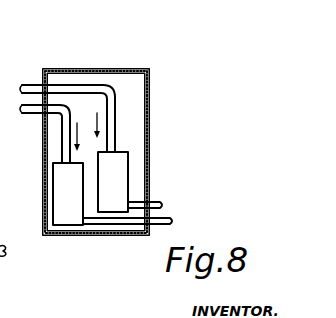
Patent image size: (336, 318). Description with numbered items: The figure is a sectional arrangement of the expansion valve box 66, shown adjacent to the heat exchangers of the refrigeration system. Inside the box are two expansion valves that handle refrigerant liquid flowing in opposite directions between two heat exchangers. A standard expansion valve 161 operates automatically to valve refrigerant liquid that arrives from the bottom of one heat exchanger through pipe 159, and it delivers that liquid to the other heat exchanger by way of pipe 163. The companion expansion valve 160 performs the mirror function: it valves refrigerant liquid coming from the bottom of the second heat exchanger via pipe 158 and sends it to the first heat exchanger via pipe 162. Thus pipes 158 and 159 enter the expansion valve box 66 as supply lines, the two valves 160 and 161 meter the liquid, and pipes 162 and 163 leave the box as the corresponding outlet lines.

The expansion valve box 66 is at (132, 94).
The pipe 158 is at (35, 85).
The pipe 159 is at (33, 113).
The expansion valve 160 is at (120, 170).
The standard expansion valve 161 is at (68, 210).
The pipe 162 is at (163, 204).
The pipe 163 is at (172, 222).